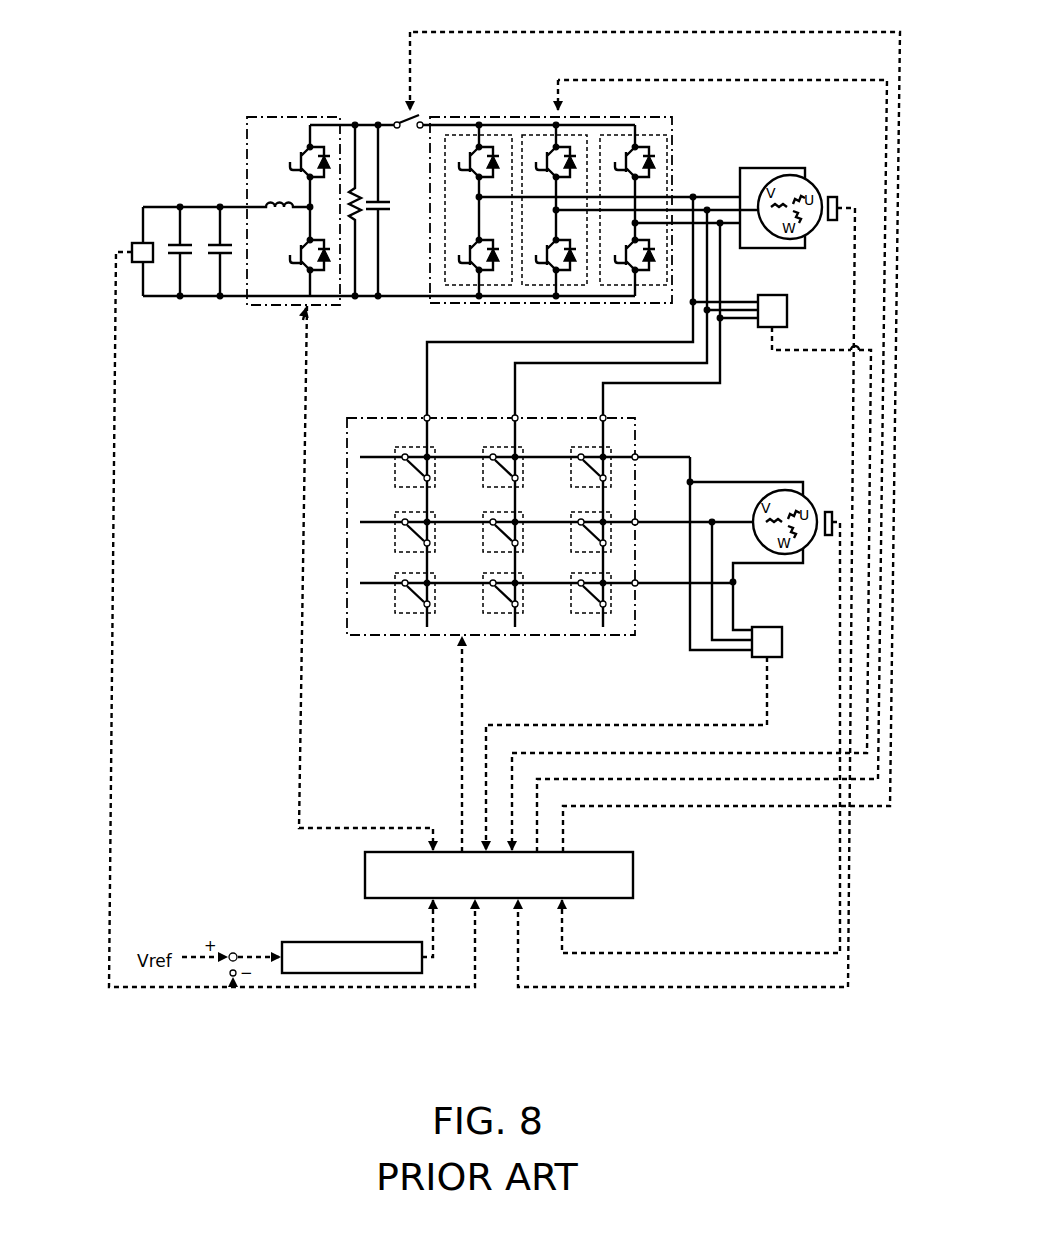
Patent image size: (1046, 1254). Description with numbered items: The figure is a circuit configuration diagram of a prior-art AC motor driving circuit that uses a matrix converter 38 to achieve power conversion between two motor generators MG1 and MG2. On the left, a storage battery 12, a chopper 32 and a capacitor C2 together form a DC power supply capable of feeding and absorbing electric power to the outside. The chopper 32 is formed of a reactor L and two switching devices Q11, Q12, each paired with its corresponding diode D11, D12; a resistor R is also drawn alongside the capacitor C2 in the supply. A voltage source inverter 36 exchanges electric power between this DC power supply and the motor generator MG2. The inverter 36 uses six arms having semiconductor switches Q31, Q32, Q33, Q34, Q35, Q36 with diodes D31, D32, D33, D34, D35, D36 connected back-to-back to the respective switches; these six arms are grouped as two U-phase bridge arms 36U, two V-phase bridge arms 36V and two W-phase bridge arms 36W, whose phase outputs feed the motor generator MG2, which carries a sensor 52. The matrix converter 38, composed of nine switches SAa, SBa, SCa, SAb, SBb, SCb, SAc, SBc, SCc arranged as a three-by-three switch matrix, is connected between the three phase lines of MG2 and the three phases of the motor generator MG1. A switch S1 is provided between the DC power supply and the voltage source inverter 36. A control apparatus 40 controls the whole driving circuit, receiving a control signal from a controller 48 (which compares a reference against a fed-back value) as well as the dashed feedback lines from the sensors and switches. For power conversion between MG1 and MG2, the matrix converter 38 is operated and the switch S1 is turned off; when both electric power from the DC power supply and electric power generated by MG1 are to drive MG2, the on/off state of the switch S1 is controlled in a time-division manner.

The storage battery 12 is at (172, 263).
The chopper 32 is at (302, 213).
The voltage source inverter 36 is at (576, 189).
The U-phase bridge arms 36U is at (497, 135).
The V-phase bridge arms 36V is at (575, 135).
The W-phase bridge arms 36W is at (645, 135).
The matrix converter 38 is at (552, 519).
The control apparatus 40 is at (633, 876).
The controller 48 is at (369, 975).
The rotation sensor 52 is at (832, 222).
The reactor L is at (265, 200).
The resistor R is at (349, 198).
The capacitor C2 is at (380, 212).
The switch S1 is at (408, 139).
The switching device Q11 is at (300, 150).
The diode D11 is at (326, 150).
The switching device Q12 is at (298, 275).
The diode D12 is at (327, 275).
The semiconductor switch Q31 is at (468, 137).
The diode D31 is at (496, 165).
The semiconductor switch Q32 is at (468, 272).
The diode D32 is at (496, 258).
The semiconductor switch Q33 is at (545, 137).
The diode D33 is at (573, 165).
The semiconductor switch Q34 is at (545, 272).
The diode D34 is at (573, 258).
The semiconductor switch Q35 is at (623, 137).
The diode D35 is at (655, 137).
The semiconductor switch Q36 is at (623, 272).
The diode D36 is at (655, 272).
The motor generator MG1 is at (775, 490).
The motor generator MG2 is at (772, 170).
The switch SAa is at (405, 452).
The switch SBa is at (493, 452).
The switch SCa is at (581, 452).
The switch SAb is at (405, 517).
The switch SBb is at (493, 517).
The switch SCb is at (581, 517).
The switch SAc is at (405, 578).
The switch SBc is at (493, 578).
The switch SCc is at (581, 578).